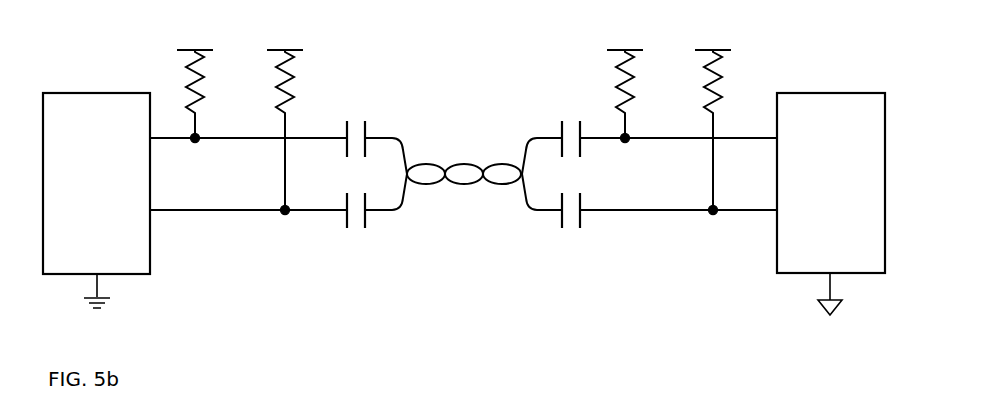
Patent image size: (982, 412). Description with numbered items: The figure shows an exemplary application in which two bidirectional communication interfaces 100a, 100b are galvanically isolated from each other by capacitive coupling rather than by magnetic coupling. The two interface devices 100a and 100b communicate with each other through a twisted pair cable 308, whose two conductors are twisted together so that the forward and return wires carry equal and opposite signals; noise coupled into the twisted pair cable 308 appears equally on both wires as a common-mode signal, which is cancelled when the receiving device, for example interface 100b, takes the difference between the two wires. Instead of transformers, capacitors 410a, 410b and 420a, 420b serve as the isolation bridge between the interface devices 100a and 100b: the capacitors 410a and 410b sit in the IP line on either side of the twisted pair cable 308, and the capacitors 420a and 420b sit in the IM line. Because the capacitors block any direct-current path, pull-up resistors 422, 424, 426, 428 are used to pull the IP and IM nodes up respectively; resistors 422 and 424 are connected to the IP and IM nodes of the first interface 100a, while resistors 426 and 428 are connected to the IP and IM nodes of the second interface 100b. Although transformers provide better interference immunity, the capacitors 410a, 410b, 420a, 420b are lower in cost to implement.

The bidirectional communication interface 100a is at (97, 93).
The bidirectional communication interface 100b is at (828, 93).
The twisted pair cable 308 is at (447, 163).
The capacitor 410a is at (350, 150).
The capacitor 410b is at (582, 145).
The capacitor 420a is at (350, 232).
The capacitor 420b is at (585, 228).
The pull-up resistor 422 is at (185, 70).
The pull-up resistor 424 is at (302, 70).
The pull-up resistor 426 is at (617, 82).
The pull-up resistor 428 is at (728, 70).